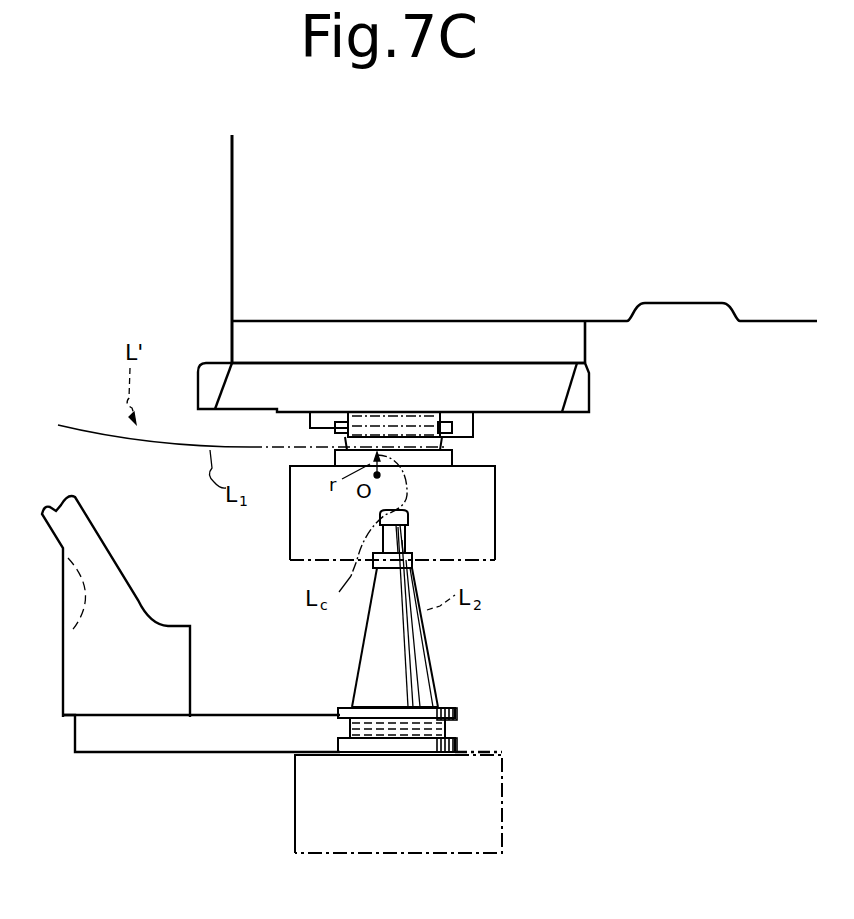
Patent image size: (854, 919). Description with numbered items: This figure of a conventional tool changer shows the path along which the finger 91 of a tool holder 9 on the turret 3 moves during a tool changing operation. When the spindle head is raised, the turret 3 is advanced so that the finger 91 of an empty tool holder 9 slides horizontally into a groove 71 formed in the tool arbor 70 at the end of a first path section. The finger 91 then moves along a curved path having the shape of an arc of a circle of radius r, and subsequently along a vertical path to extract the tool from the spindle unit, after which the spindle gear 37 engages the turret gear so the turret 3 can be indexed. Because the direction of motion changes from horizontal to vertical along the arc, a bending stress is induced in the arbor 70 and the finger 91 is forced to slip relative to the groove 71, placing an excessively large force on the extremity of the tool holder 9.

The turret 3 is at (75, 687).
The tool holder 9 is at (213, 742).
The spindle gear 37 is at (590, 385).
The arbor 70 is at (430, 647).
The groove 71 is at (455, 727).
The finger 91 is at (447, 705).